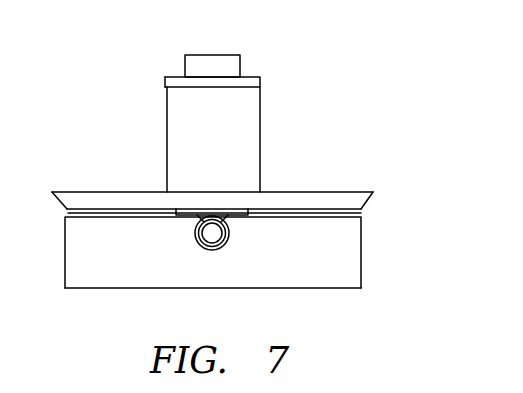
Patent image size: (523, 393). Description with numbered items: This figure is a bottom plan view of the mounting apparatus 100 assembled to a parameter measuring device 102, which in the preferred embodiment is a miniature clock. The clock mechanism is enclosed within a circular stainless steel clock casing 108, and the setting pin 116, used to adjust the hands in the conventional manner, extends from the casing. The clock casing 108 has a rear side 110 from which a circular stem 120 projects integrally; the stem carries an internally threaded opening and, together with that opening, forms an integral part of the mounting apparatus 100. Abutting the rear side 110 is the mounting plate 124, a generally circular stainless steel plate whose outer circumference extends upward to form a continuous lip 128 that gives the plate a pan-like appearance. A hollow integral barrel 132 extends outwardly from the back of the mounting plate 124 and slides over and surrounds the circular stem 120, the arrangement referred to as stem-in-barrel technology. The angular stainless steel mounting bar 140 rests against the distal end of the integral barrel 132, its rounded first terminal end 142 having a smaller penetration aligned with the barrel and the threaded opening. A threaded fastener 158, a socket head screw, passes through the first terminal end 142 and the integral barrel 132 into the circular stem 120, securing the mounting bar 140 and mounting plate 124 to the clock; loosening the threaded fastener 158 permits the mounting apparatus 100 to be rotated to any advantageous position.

The mounting apparatus 100 is at (168, 65).
The parameter measuring device 102 is at (118, 289).
The clock casing 108 is at (342, 254).
The rear side 110 is at (100, 212).
The setting pin 116 is at (212, 238).
The circular stem 120 is at (235, 212).
The mounting plate 124 is at (90, 192).
The continuous lip 128 is at (374, 193).
The integral barrel 132 is at (245, 118).
The mounting bar 140 is at (261, 81).
The first terminal end 142 is at (165, 82).
The threaded fastener 158 is at (227, 55).